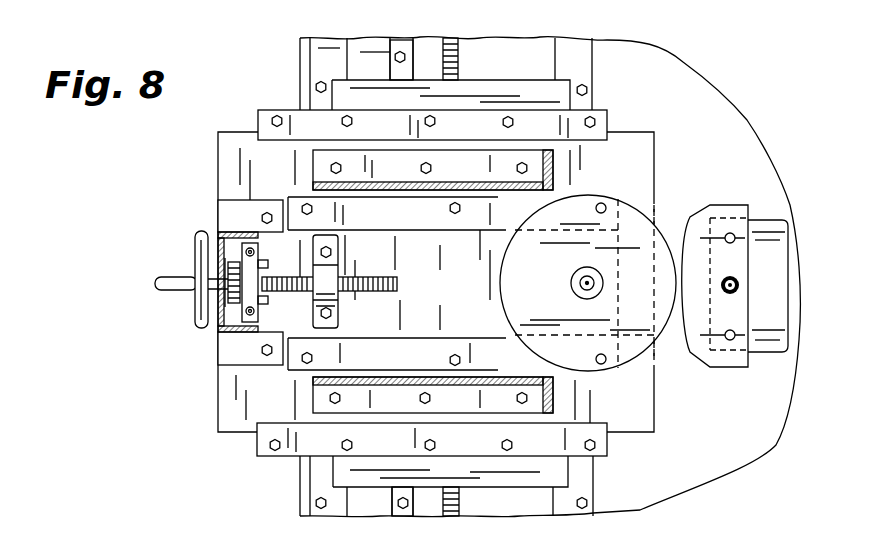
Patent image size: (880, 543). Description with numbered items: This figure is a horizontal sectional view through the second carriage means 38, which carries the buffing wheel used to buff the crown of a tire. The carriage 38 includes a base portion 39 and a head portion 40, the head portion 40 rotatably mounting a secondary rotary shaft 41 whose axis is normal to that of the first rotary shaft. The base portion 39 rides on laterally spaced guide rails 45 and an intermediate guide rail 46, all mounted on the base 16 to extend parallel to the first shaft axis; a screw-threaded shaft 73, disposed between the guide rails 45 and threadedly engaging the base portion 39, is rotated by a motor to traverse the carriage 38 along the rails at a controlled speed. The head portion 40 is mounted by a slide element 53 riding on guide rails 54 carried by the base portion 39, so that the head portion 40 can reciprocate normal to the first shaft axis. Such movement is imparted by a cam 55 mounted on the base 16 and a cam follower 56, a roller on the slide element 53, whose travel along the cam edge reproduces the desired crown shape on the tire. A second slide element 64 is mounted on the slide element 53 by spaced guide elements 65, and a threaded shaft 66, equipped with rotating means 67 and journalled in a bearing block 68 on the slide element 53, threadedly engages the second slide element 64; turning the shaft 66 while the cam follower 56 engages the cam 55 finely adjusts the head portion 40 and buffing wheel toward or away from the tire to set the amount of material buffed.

The base 16 is at (683, 72).
The second carriage means 38 is at (194, 425).
The base portion 39 is at (609, 111).
The head portion 40 is at (655, 153).
The secondary rotary shaft 41 is at (398, 533).
The guide rails 45 is at (322, 58).
The guide rail 46 is at (413, 50).
The slide element 53 is at (236, 166).
The guide rails 54 is at (257, 118).
The cam 55 is at (727, 205).
The cam follower 56 is at (637, 224).
The second slide element 64 is at (459, 299).
The guide elements 65 is at (473, 222).
The threaded shaft 66 is at (393, 270).
The means for rotating 67 is at (236, 299).
The bearing block 68 is at (243, 318).
The screw-threaded shaft 73 is at (462, 58).